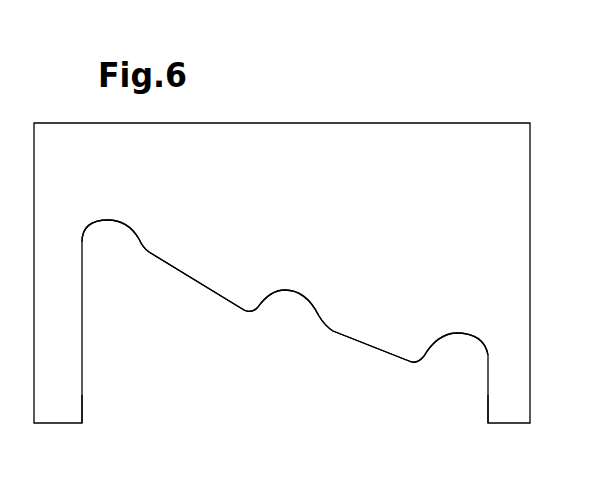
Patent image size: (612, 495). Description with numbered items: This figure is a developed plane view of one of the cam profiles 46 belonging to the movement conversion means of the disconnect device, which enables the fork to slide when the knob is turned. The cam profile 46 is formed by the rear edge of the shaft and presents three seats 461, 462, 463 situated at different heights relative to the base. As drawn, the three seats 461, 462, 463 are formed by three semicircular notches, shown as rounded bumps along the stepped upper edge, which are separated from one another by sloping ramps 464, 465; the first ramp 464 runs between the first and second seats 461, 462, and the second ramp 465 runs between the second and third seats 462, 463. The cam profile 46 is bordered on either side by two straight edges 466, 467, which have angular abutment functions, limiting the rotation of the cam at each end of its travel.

The cam profile 46 is at (240, 393).
The first seat 461 is at (112, 222).
The second seat 462 is at (287, 292).
The third seat 463 is at (467, 340).
The sloping ramp 464 is at (188, 282).
The sloping ramp 465 is at (355, 340).
The straight edge 466 is at (83, 397).
The straight edge 467 is at (488, 408).